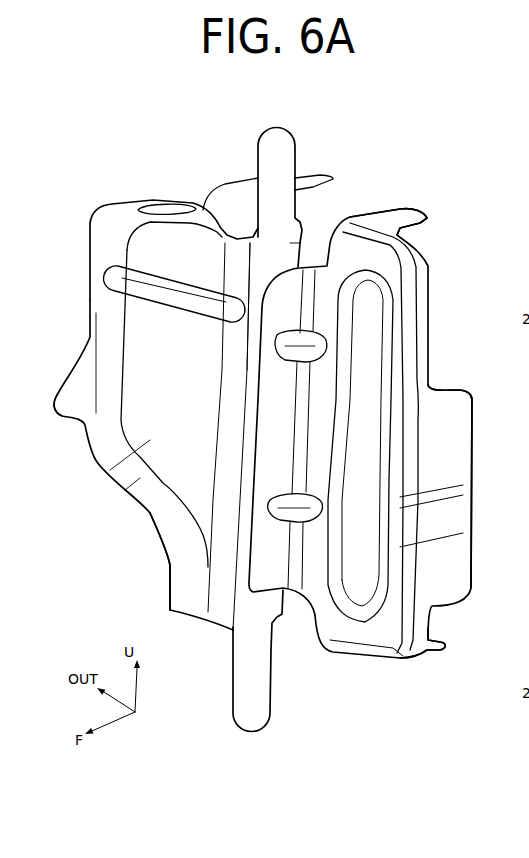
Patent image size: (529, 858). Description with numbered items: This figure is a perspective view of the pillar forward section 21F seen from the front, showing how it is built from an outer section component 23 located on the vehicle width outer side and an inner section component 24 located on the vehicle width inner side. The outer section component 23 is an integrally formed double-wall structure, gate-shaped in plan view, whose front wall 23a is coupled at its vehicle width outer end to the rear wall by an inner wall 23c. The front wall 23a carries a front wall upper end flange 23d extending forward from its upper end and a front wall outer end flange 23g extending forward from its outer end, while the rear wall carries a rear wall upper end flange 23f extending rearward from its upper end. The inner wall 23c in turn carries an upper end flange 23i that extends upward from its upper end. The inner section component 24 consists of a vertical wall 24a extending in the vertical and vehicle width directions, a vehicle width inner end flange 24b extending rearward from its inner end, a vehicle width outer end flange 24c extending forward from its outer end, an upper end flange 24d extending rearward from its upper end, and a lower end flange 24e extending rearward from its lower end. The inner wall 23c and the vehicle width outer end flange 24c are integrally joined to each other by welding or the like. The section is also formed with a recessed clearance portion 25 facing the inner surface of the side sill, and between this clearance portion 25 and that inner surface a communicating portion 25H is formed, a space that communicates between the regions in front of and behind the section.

The pillar forward section 21F is at (376, 119).
The outer section component 23 is at (106, 542).
The front wall 23a is at (170, 432).
The inner wall 23c is at (300, 243).
The front wall upper end flange 23d is at (117, 208).
The rear wall upper end flange 23f is at (327, 175).
The front wall outer end flange 23g is at (53, 402).
The upper end flange 23i is at (297, 147).
The inner section component 24 is at (355, 680).
The vertical wall 24a is at (382, 320).
The vehicle width inner end flange 24b is at (473, 428).
The vehicle width outer end flange 24c is at (273, 413).
The upper end flange 24d is at (422, 213).
The lower end flange 24e is at (437, 646).
The clearance portion 25 is at (168, 560).
The communicating portion 25H is at (109, 528).